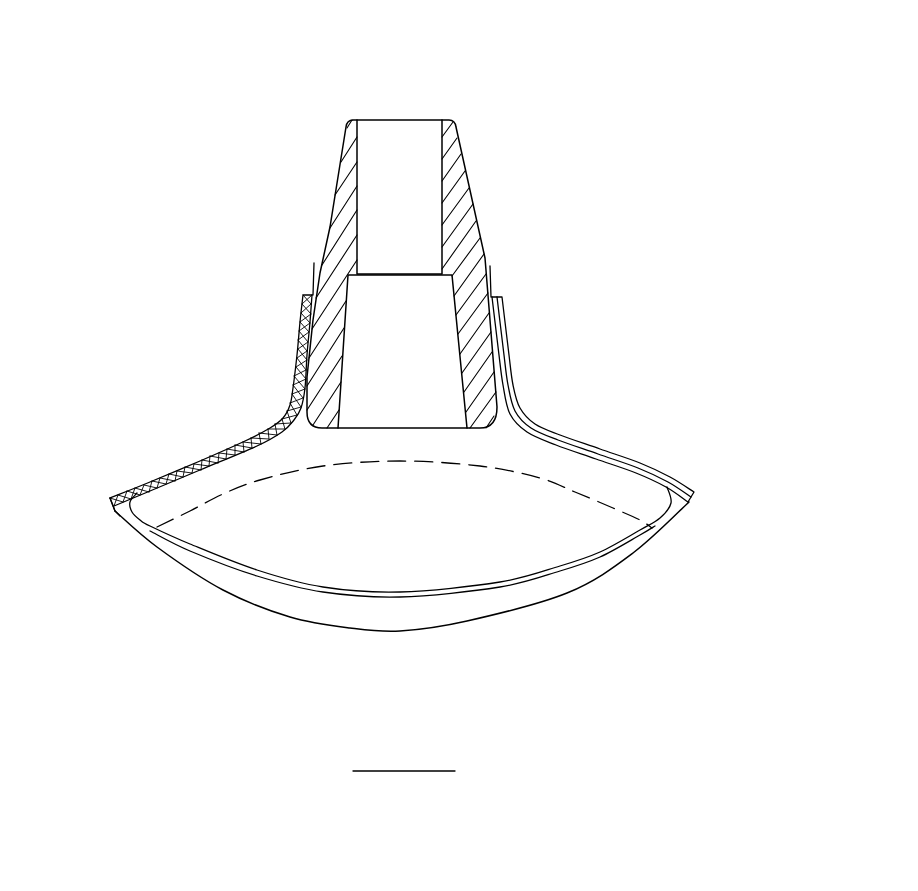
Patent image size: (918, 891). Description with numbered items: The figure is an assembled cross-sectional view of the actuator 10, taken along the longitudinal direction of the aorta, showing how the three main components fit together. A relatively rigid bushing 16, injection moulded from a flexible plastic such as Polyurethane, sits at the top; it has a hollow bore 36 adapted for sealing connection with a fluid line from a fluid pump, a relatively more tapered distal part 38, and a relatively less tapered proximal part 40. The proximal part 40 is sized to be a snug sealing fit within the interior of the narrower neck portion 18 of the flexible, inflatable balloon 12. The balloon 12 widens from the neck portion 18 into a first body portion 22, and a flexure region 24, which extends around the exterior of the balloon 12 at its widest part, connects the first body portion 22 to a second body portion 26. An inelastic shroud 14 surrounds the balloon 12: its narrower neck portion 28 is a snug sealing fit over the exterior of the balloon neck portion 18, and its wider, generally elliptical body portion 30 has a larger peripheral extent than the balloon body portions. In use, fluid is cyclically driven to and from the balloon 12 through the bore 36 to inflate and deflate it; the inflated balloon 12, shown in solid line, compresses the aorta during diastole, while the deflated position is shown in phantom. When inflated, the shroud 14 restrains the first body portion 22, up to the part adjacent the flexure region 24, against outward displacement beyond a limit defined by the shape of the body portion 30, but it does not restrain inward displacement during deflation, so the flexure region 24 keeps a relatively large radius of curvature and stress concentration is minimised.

The actuator 10 is at (577, 226).
The balloon 12 is at (300, 275).
The shroud 14 is at (588, 419).
The bushing 16 is at (505, 164).
The neck portion 18 is at (510, 357).
The first body portion 22 is at (557, 440).
The flexure region 24 is at (121, 518).
The second body portion 26 is at (237, 667).
The neck portion 28 is at (507, 320).
The body portion 30 is at (648, 466).
The hollow bore 36 is at (400, 135).
The distal part 38 is at (457, 180).
The proximal part 40 is at (472, 332).